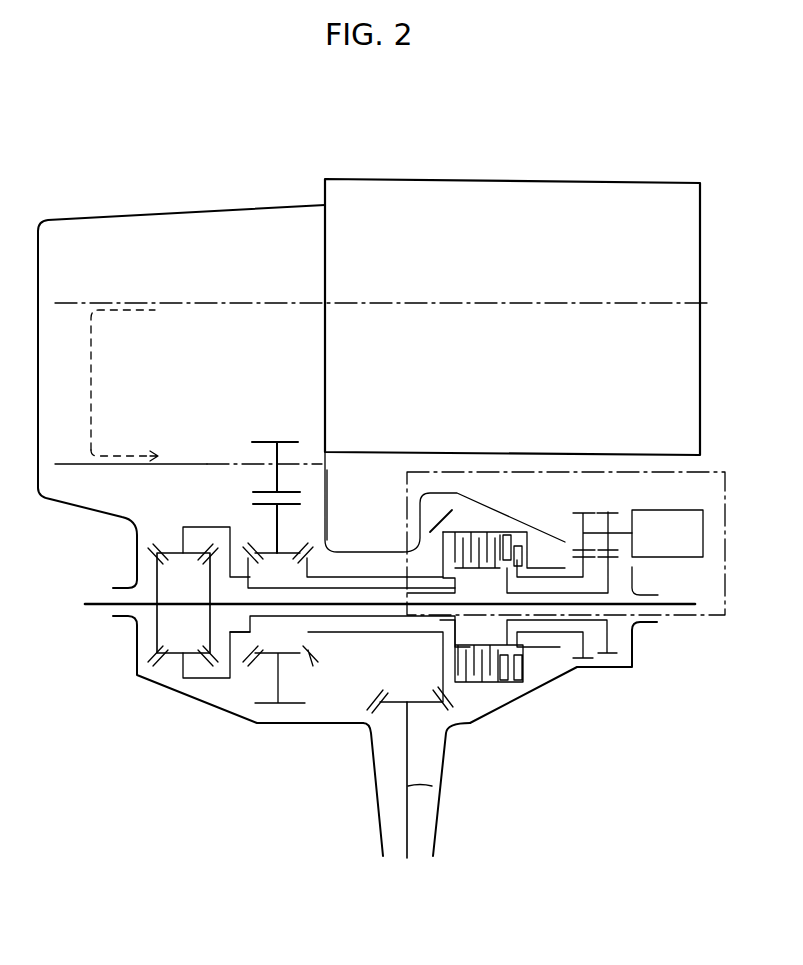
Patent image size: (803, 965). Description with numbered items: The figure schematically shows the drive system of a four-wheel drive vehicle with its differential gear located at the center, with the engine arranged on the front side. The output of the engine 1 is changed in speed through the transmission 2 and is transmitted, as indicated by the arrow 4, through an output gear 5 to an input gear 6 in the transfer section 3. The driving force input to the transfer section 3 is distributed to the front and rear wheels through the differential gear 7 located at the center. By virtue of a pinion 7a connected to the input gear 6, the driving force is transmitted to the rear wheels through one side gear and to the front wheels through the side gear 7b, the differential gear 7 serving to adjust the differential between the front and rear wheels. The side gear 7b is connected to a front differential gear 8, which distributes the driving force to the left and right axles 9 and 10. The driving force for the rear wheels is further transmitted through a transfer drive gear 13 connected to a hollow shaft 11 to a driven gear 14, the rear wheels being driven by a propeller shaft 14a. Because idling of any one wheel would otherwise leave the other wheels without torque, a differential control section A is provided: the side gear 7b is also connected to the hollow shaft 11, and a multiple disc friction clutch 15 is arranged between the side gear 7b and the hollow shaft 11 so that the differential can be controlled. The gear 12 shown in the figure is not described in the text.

The engine 1 is at (540, 215).
The transmission 2 is at (225, 230).
The transfer section 3 is at (320, 713).
The arrow 4 is at (91, 361).
The output gear 5 is at (268, 440).
The input gear 6 is at (262, 512).
The differential gear 7 is at (290, 552).
The pinion 7a is at (262, 550).
The side gear 7b is at (254, 565).
The front differential gear 8 is at (175, 577).
The axle 9 is at (102, 600).
The axle 10 is at (660, 601).
The hollow shaft 11 is at (382, 577).
The gear 12 is at (377, 620).
The transfer drive gear 13 is at (437, 503).
The driven gear 14 is at (385, 692).
The propeller shaft 14a is at (440, 797).
The multiple disc friction clutch 15 is at (492, 532).
The differential control section A is at (545, 466).